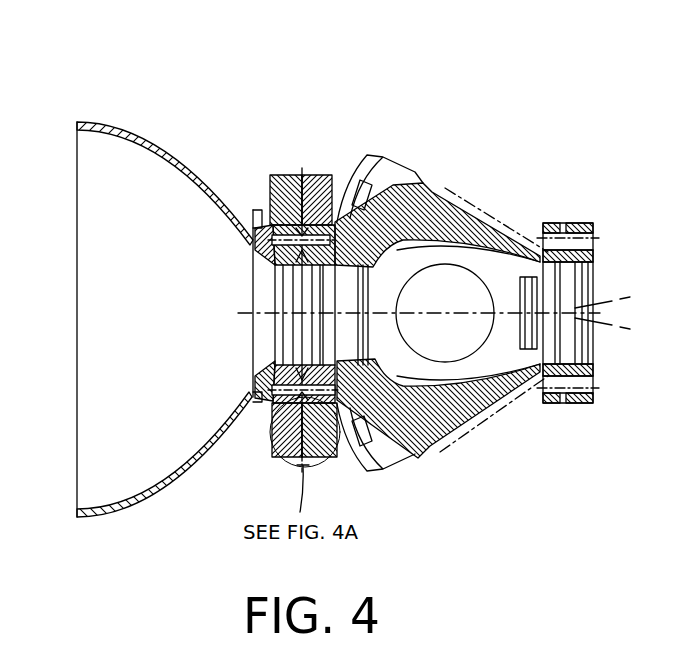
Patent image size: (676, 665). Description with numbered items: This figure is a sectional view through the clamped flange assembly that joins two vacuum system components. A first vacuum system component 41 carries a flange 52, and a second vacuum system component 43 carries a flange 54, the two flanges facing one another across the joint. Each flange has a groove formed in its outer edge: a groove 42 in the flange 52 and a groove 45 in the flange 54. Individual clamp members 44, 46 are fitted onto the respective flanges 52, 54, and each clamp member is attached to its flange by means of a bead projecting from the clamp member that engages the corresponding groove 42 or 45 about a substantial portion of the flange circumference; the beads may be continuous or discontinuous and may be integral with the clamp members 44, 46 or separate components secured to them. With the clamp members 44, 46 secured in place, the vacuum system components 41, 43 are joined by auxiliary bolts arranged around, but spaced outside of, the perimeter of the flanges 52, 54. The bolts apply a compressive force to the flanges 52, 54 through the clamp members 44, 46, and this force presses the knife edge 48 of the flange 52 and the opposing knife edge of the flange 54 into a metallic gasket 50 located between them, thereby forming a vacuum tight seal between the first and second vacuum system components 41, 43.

The vacuum system component 41 is at (96, 90).
The groove 42 is at (273, 425).
The vacuum system component 43 is at (512, 162).
The clamp member 44 is at (278, 177).
The groove 45 is at (342, 453).
The clamp member 46 is at (318, 163).
The knife edge 48 is at (283, 346).
The metallic gasket 50 is at (283, 283).
The flange 52 is at (255, 212).
The flange 54 is at (340, 178).